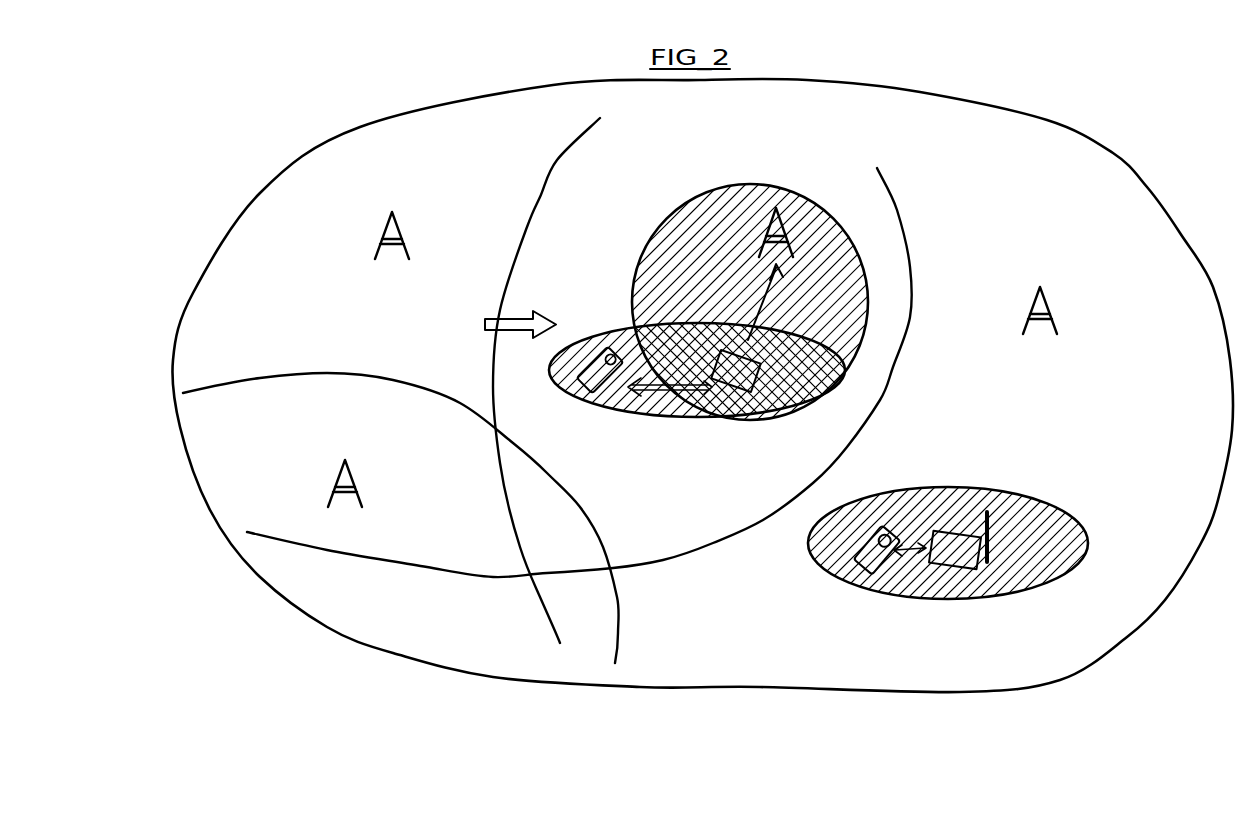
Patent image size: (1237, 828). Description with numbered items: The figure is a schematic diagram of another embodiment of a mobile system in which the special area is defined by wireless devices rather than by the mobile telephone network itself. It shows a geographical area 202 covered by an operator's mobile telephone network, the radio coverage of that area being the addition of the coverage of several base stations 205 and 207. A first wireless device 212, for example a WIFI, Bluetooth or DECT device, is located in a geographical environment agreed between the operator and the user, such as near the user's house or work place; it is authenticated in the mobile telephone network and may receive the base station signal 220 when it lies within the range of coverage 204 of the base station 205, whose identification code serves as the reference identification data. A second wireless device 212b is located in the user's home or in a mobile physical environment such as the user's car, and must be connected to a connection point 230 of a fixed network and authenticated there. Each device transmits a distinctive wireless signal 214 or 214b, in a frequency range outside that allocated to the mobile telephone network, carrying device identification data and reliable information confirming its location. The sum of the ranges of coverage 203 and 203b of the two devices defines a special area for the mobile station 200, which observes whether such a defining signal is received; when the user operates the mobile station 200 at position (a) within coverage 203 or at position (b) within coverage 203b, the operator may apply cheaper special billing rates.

The mobile station 200 is at (589, 346).
The geographical area 202 is at (1147, 181).
The range of coverage of the wireless device 203 is at (650, 418).
The range of coverage of the wireless device 203b is at (1089, 548).
The range of coverage of the base station 204 is at (803, 207).
The base station 205 is at (767, 223).
The base station 207 is at (399, 223).
The wireless device 212 is at (738, 420).
The wireless device 212b is at (953, 571).
The distinctive wireless signal 214 is at (677, 418).
The distinctive wireless signal 214b is at (873, 593).
The base station signal 220 is at (768, 281).
The connection point 230 is at (1000, 530).